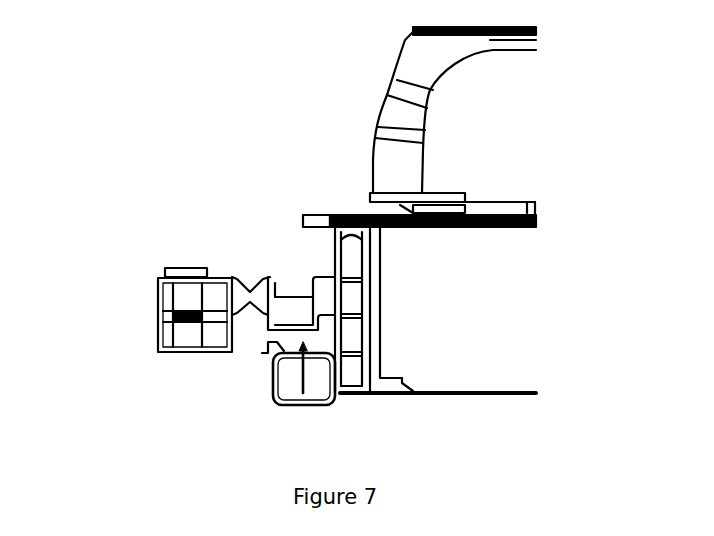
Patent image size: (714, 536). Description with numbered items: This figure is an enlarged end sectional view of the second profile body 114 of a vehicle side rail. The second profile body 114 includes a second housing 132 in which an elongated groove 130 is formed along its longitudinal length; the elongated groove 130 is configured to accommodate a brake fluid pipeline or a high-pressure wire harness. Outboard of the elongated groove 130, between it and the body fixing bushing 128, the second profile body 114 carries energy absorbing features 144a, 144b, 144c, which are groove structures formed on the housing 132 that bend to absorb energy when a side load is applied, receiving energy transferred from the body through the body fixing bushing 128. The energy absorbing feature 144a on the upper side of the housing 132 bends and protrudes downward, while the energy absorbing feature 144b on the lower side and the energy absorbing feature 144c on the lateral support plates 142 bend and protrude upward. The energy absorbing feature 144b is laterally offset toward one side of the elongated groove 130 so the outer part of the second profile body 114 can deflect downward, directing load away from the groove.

The second profile body 114 is at (306, 78).
The elongated groove 130 is at (297, 288).
The energy absorbing feature 144a is at (249, 278).
The energy absorbing feature 144b is at (268, 350).
The energy absorbing feature 144c is at (250, 312).
The second housing 132 is at (157, 333).
The lateral support plates 142 is at (158, 313).
The body fixing bushing 128 is at (170, 270).